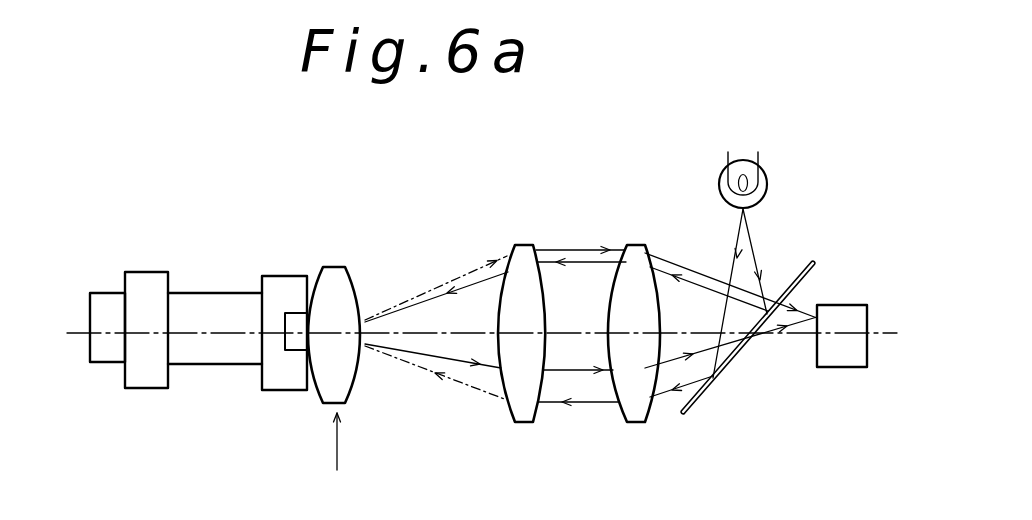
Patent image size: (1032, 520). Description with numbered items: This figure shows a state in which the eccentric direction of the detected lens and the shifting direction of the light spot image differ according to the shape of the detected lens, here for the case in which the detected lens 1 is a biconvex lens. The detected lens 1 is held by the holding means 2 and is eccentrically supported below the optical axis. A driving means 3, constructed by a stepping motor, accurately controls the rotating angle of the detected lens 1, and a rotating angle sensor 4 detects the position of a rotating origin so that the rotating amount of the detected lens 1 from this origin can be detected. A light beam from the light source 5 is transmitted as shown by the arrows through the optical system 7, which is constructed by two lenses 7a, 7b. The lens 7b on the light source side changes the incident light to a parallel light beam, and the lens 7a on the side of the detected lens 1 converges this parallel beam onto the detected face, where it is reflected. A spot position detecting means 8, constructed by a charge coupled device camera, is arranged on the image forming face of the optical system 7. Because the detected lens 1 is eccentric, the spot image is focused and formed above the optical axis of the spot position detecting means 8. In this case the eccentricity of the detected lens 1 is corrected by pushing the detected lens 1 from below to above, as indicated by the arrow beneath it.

The detected lens 1 is at (352, 284).
The holding means 2 is at (288, 291).
The driving means 3 is at (215, 300).
The rotating angle sensor 4 is at (104, 299).
The light source 5 is at (767, 185).
The optical system 7 is at (643, 178).
The lens 7a is at (523, 248).
The lens 7b is at (635, 248).
The spot position detecting means 8 is at (845, 312).